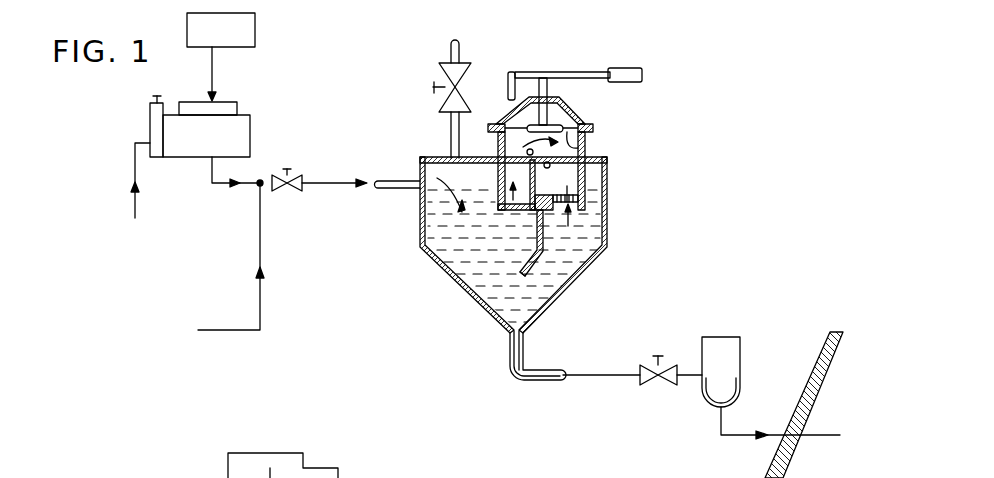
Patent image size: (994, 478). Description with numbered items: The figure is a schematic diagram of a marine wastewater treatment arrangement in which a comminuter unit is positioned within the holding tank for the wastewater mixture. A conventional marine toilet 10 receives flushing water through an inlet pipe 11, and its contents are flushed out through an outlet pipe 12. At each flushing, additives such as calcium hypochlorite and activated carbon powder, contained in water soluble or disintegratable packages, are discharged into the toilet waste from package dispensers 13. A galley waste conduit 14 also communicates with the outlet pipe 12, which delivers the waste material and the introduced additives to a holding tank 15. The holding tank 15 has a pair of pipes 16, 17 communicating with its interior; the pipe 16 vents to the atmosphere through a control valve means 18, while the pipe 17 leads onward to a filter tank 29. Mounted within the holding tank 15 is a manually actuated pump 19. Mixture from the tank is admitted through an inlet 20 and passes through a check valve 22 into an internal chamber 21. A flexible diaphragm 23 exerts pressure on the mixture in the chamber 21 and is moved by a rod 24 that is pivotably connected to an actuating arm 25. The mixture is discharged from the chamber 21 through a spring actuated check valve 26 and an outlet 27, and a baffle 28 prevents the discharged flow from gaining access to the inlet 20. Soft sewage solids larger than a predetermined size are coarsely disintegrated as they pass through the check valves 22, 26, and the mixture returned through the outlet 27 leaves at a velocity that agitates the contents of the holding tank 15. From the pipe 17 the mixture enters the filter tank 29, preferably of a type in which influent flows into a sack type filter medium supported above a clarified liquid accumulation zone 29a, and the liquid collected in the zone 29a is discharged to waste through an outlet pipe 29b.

The marine toilet 10 is at (174, 100).
The inlet pipe 11 is at (135, 205).
The outlet pipe 12 is at (226, 190).
The package dispensers 13 is at (256, 30).
The galley waste conduit 14 is at (260, 308).
The holding tank 15 is at (571, 278).
The pipe 16 is at (450, 125).
The pipe 17 is at (597, 373).
The control valve means 18 is at (440, 78).
The manually actuated pump 19 is at (612, 121).
The inlet 20 is at (520, 212).
The internal chamber 21 is at (566, 140).
The check valve 22 is at (520, 158).
The flexible diaphragm 23 is at (600, 152).
The rod 24 is at (548, 90).
The actuating arm 25 is at (583, 70).
The spring actuated check valve 26 is at (567, 168).
The outlet 27 is at (572, 217).
The baffle 28 is at (535, 268).
The filter tank 29 is at (702, 403).
The clarified liquid accumulation zone 29a is at (736, 396).
The outlet pipe 29b is at (735, 438).